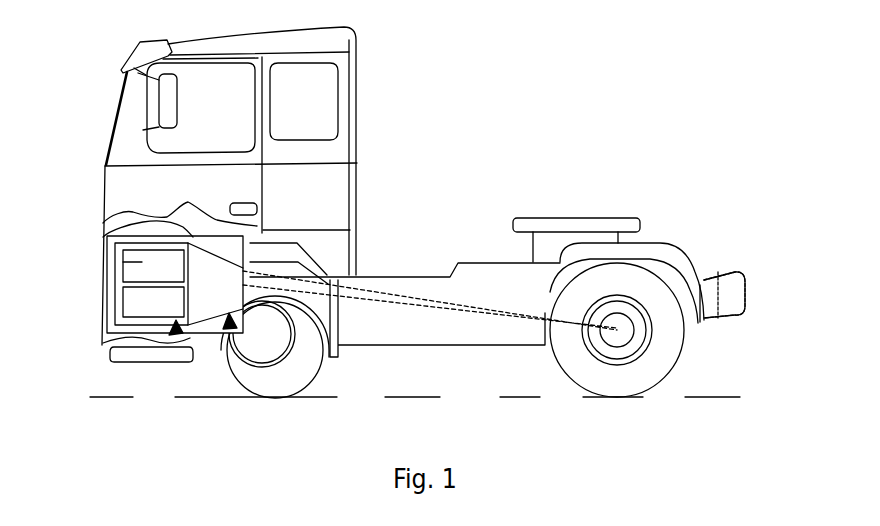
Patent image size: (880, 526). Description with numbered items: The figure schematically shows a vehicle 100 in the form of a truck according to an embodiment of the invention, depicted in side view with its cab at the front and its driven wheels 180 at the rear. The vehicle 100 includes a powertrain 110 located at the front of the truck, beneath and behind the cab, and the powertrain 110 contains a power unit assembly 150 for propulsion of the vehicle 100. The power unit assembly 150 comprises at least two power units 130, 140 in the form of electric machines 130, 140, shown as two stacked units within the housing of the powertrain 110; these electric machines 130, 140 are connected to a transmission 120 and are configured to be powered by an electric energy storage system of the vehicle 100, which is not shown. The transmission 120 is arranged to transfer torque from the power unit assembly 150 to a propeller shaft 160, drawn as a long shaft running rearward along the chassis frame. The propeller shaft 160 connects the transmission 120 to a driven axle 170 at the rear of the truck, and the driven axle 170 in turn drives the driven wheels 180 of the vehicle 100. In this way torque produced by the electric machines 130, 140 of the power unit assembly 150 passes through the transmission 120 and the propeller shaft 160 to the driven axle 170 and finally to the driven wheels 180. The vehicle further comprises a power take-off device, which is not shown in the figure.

The vehicle 100 is at (598, 157).
The powertrain 110 is at (106, 233).
The transmission 120 is at (236, 332).
The electric machine 130 is at (115, 279).
The electric machine 140 is at (142, 302).
The power unit assembly 150 is at (178, 335).
The propeller shaft 160 is at (407, 292).
The driven axle 170 is at (618, 330).
The driven wheels 180 is at (620, 378).